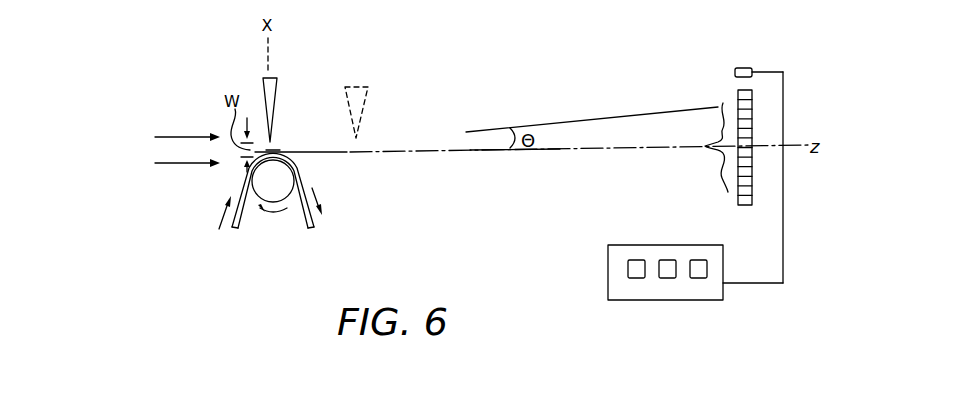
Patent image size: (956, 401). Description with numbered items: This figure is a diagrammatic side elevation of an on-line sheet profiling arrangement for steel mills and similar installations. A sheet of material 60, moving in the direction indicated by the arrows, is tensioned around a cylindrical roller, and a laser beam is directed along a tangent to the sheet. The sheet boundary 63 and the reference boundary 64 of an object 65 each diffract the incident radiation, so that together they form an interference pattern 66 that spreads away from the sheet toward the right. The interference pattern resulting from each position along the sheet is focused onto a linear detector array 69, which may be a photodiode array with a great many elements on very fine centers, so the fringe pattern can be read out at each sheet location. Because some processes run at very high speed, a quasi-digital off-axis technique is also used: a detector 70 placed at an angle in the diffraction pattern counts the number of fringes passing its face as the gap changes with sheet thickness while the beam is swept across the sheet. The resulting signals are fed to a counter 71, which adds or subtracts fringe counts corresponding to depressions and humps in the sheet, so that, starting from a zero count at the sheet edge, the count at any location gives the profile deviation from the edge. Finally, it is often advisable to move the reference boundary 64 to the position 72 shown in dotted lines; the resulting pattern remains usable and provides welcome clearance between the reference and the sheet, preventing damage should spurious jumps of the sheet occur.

The sheet of material 60 is at (307, 228).
The sheet boundary 63 is at (272, 155).
The reference boundary 64 is at (278, 145).
The object 65 is at (273, 85).
The interference pattern 66 is at (710, 165).
The linear detector array 69 is at (745, 205).
The detector 70 is at (745, 67).
The counter 71 is at (662, 300).
The position of reference boundary 72 is at (357, 100).